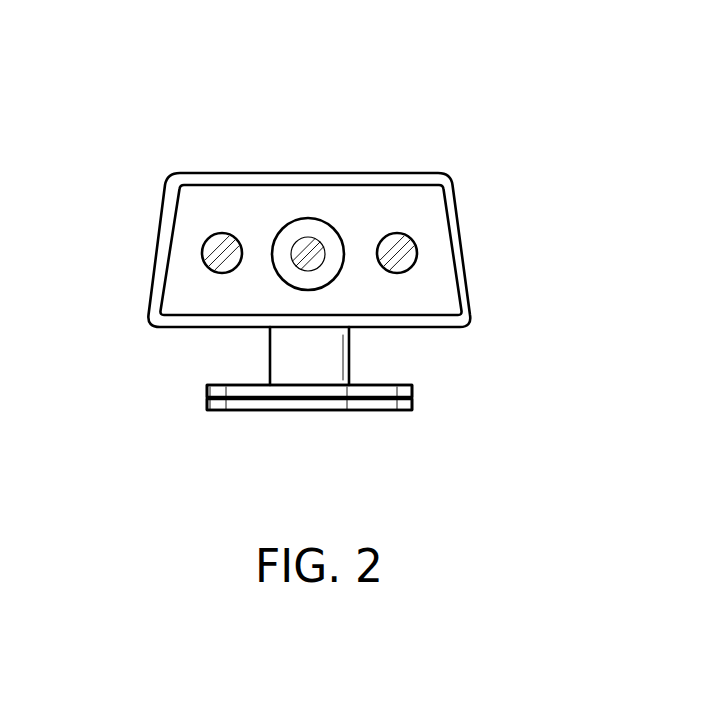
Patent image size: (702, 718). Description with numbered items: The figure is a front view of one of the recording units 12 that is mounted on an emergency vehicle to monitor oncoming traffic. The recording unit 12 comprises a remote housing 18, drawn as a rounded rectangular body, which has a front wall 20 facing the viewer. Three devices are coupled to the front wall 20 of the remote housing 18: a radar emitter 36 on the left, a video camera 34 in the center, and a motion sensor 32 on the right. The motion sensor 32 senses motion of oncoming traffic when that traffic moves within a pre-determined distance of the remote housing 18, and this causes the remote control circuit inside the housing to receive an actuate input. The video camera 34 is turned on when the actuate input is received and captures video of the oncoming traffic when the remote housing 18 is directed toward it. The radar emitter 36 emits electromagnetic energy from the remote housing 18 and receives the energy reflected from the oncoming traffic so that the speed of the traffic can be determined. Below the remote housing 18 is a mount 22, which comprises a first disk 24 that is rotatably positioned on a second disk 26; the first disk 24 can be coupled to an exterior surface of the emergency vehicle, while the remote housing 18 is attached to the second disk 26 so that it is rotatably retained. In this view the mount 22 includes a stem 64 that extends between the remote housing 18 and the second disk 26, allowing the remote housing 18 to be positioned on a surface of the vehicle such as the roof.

The recording unit 12 is at (202, 112).
The remote housing 18 is at (380, 173).
The front wall 20 is at (438, 298).
The mount 22 is at (254, 442).
The first disk 24 is at (207, 410).
The second disk 26 is at (207, 385).
The motion sensor 32 is at (412, 250).
The video camera 34 is at (303, 217).
The radar emitter 36 is at (202, 252).
The stem 64 is at (349, 355).